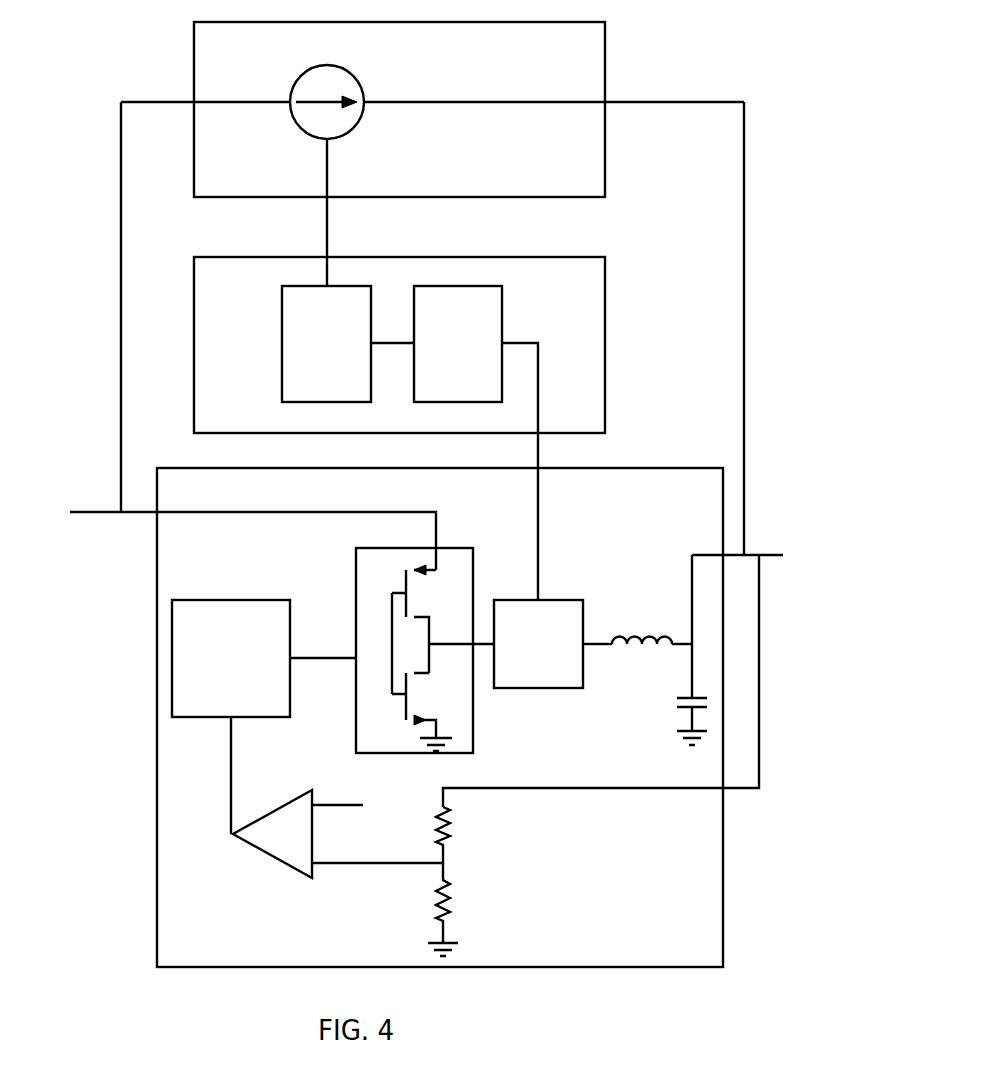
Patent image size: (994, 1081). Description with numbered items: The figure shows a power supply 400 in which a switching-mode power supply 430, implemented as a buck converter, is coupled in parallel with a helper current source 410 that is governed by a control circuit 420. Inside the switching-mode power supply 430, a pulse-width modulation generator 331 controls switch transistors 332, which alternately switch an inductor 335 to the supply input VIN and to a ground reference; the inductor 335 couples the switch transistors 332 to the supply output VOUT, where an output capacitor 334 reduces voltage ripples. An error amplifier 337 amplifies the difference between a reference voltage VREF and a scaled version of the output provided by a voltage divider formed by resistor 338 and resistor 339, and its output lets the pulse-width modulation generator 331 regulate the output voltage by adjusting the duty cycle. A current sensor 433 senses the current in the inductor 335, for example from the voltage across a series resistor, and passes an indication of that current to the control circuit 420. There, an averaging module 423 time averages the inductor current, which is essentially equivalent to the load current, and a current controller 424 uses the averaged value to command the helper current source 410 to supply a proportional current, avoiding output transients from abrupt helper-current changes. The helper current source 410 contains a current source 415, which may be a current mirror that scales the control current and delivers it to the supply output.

The power supply 400 is at (722, 36).
The helper current source 410 is at (194, 45).
The current source 415 is at (297, 128).
The control circuit 420 is at (194, 382).
The averaging module 423 is at (503, 322).
The current controller 424 is at (282, 392).
The switching-mode power supply 430 is at (157, 922).
The pulse-width modulation generator 331 is at (231, 598).
The switch transistors 332 is at (474, 547).
The current sensor 433 is at (577, 598).
The inductor 335 is at (637, 630).
The output capacitor 334 is at (676, 707).
The error amplifier 337 is at (279, 863).
The resistor 338 is at (450, 838).
The resistor 339 is at (450, 913).